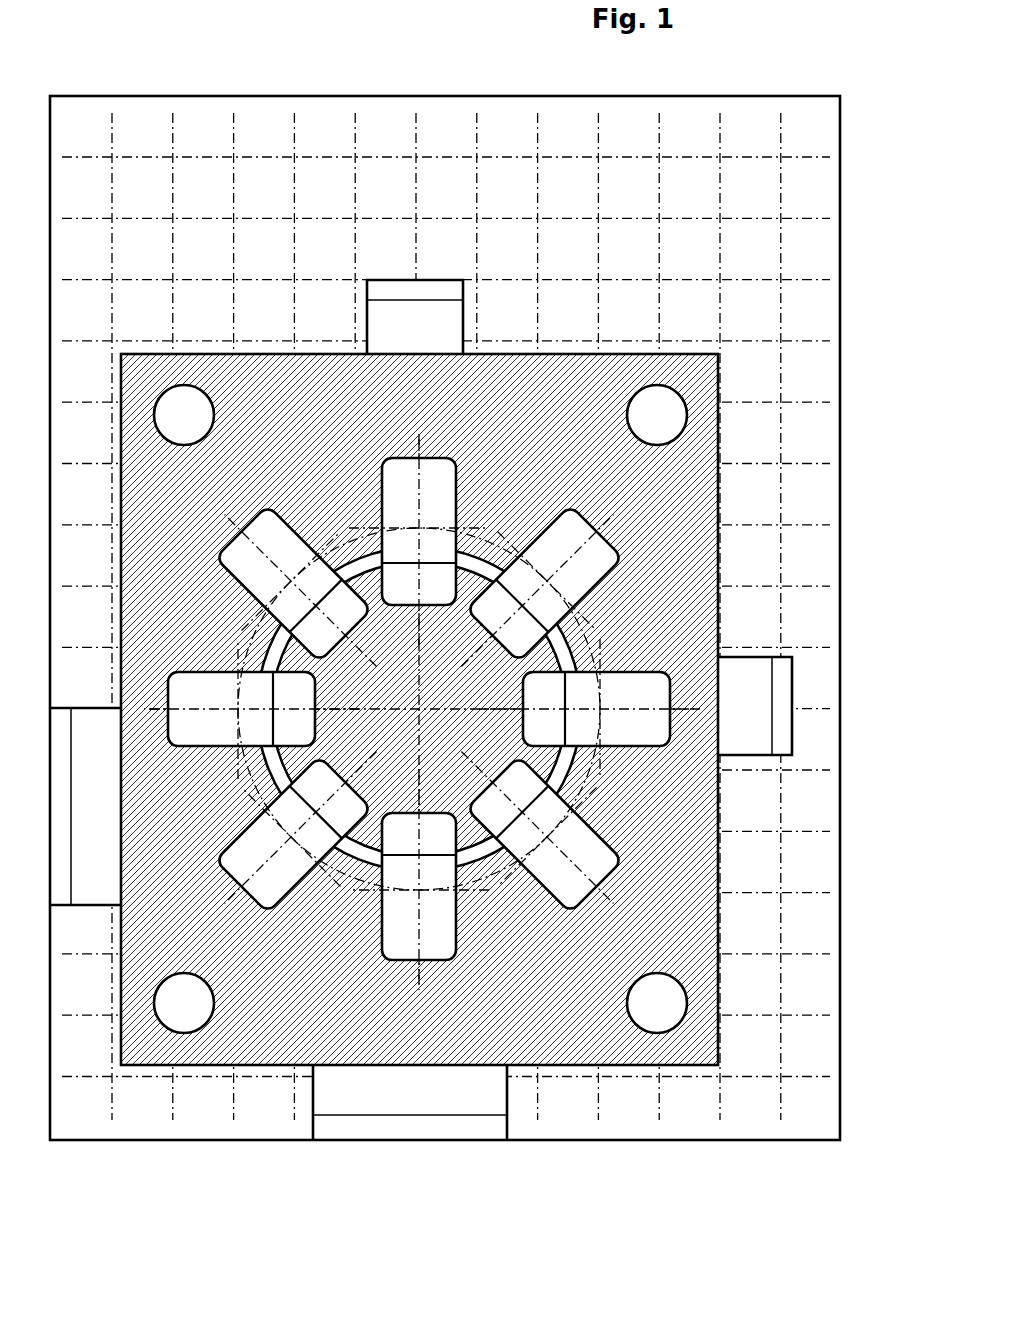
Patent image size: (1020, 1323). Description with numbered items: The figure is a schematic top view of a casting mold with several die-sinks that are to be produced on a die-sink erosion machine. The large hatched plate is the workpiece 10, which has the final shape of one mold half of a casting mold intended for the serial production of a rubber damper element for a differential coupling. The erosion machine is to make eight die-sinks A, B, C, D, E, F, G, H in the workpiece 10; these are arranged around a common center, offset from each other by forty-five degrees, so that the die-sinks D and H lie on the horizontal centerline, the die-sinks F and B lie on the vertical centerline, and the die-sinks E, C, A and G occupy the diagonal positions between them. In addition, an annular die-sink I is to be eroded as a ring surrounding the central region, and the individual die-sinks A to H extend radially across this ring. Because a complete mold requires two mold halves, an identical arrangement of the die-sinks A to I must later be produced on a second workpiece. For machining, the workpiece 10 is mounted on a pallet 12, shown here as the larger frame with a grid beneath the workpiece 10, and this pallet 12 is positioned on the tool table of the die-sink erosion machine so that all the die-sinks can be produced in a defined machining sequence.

The workpiece 10 is at (558, 1048).
The pallet 12 is at (785, 1103).
The die-sink A is at (268, 880).
The die-sink B is at (442, 935).
The die-sink C is at (595, 867).
The die-sink D is at (632, 688).
The die-sink E is at (552, 540).
The die-sink F is at (437, 476).
The die-sink G is at (273, 528).
The die-sink H is at (198, 682).
The annular die-sink I is at (563, 782).